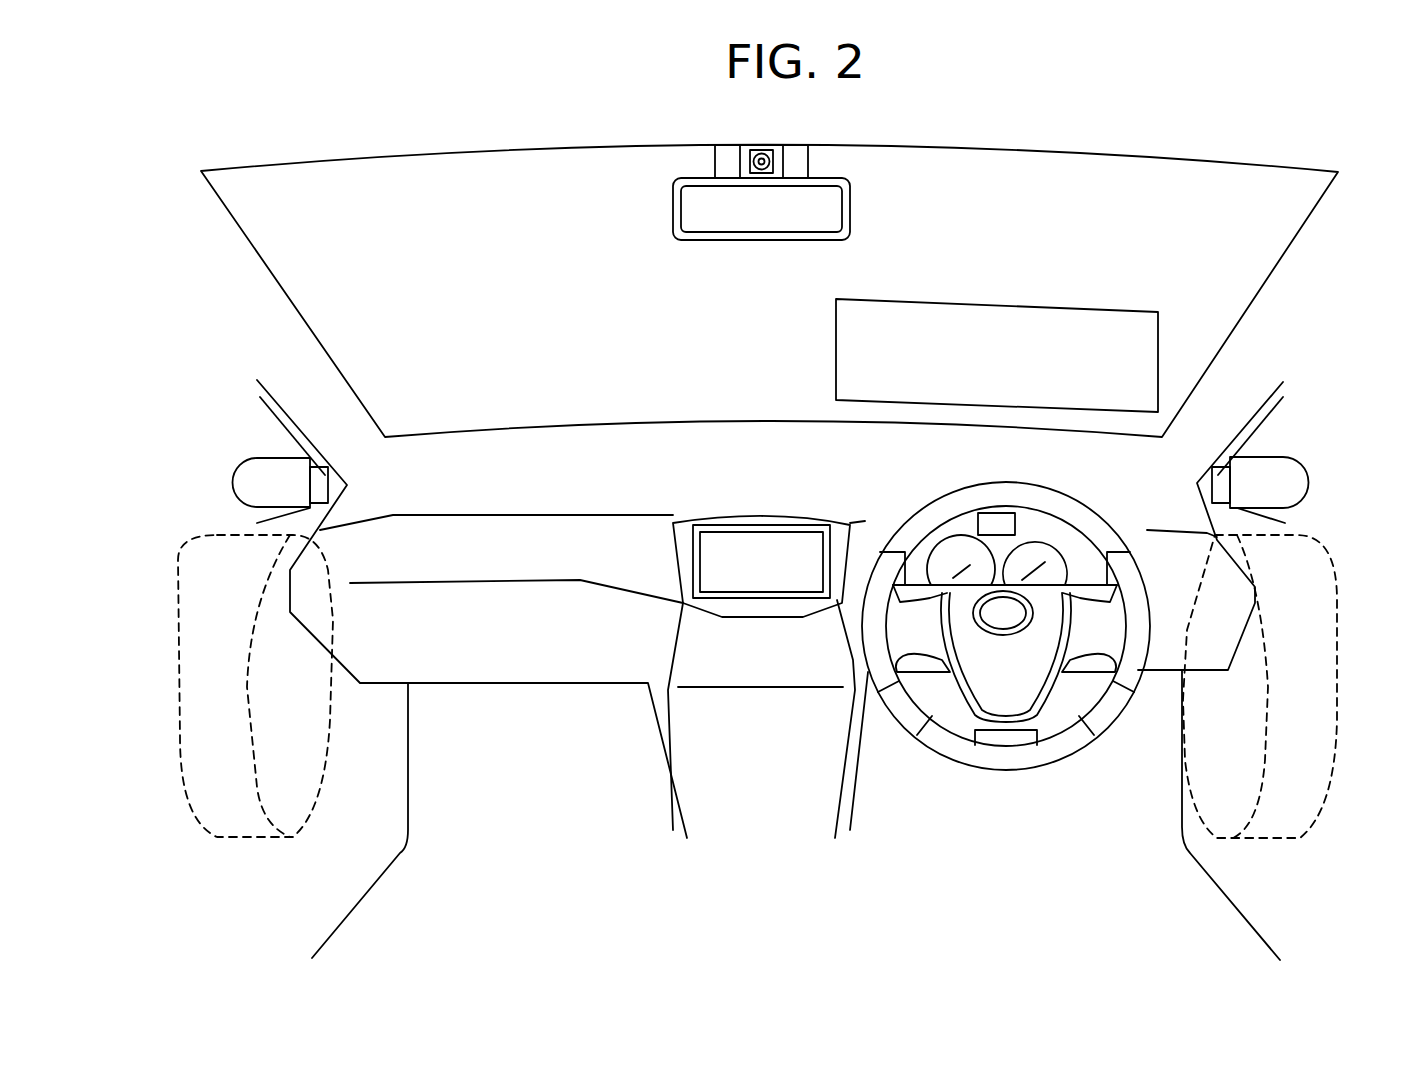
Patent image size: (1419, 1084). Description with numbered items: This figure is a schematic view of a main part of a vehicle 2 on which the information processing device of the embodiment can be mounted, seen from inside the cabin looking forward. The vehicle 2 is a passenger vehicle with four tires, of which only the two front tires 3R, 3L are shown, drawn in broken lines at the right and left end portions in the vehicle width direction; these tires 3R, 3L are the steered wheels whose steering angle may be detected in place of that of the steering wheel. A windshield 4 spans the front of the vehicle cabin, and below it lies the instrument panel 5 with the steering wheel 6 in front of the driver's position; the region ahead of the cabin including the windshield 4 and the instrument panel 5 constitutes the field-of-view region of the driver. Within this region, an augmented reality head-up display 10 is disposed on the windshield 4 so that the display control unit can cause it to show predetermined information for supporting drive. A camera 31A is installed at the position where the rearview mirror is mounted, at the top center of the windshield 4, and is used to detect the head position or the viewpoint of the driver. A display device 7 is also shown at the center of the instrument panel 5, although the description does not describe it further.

The vehicle 2 is at (230, 108).
The camera 31A is at (738, 155).
The windshield 4 is at (1118, 200).
The augmented reality head-up display (AR-HUD) 10 is at (1158, 360).
The instrument panel 5 is at (1020, 578).
The steering wheel 6 is at (993, 770).
The center display 7 is at (765, 600).
The tire 3R is at (197, 565).
The tire 3L is at (1333, 600).